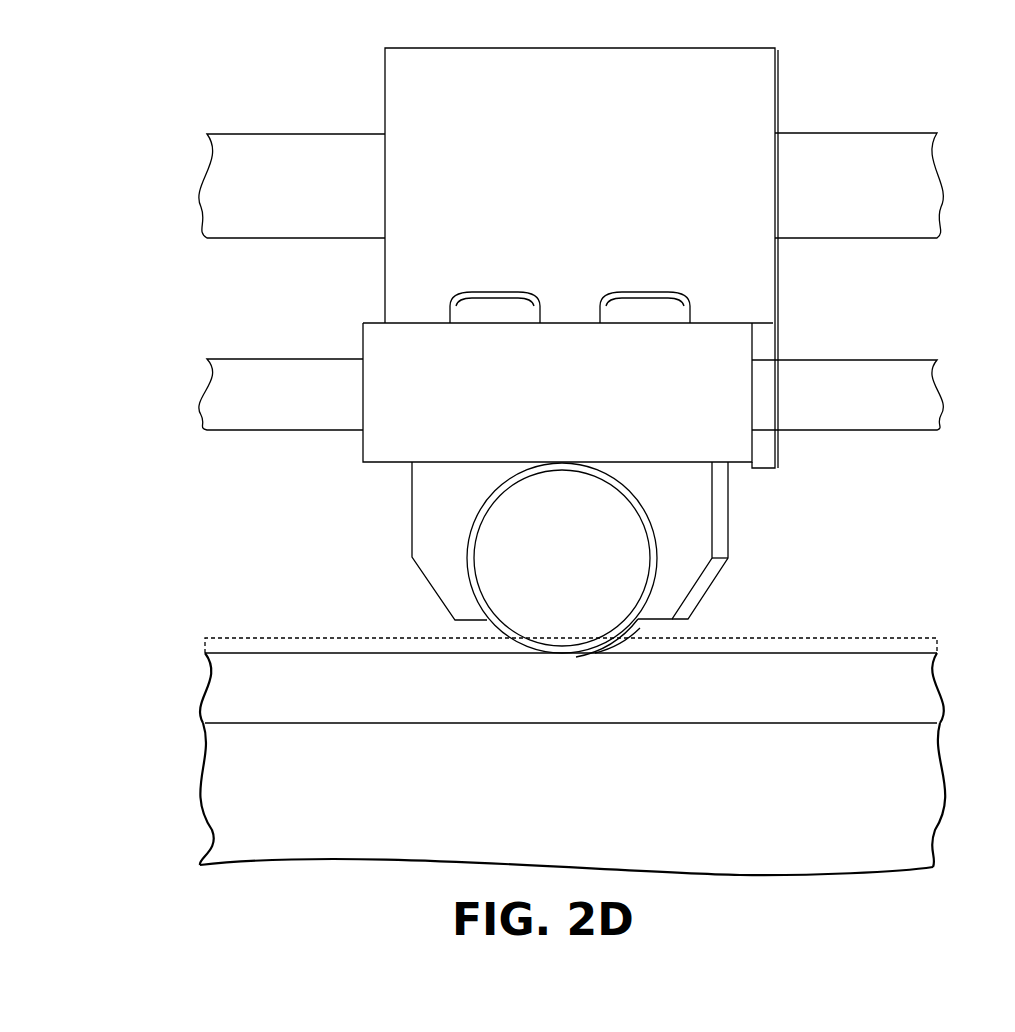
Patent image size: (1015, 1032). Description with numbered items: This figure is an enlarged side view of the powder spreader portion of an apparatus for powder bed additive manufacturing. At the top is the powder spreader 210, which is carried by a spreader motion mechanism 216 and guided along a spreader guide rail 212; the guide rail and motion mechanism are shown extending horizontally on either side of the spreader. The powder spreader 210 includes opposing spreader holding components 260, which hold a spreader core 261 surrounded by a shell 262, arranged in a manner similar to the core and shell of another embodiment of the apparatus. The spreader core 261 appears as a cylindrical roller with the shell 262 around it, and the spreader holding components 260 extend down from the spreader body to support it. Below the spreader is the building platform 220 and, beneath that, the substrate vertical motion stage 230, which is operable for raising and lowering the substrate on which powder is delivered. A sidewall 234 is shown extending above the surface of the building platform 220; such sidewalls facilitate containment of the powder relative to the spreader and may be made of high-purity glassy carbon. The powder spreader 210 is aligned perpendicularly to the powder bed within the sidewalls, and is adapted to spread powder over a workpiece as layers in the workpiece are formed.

The powder spreader 210 is at (757, 48).
The spreader motion mechanism 216 is at (260, 197).
The spreader guide rail 212 is at (883, 392).
The shell 262 is at (466, 544).
The spreader holding component 260 is at (672, 490).
The spreader core 261 is at (532, 594).
The sidewall 234 is at (885, 638).
The building platform 220 is at (865, 687).
The substrate vertical motion stage 230 is at (300, 793).